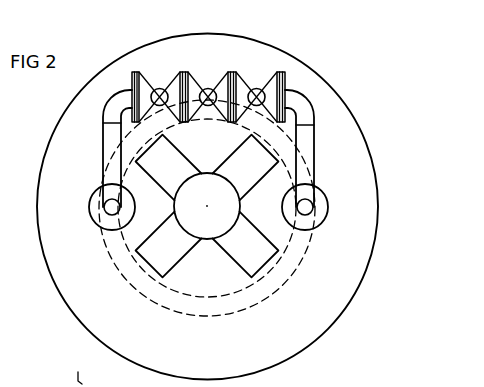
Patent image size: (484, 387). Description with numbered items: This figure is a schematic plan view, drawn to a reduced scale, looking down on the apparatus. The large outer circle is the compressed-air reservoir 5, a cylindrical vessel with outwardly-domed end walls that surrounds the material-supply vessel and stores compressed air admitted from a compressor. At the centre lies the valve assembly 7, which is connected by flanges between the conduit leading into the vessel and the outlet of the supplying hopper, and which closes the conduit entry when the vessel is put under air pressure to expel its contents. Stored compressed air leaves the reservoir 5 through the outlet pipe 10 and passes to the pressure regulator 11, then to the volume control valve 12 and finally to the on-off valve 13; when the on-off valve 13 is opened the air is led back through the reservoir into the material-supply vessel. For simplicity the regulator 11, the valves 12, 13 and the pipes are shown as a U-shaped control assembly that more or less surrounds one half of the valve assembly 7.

The compressed-air reservoir 5 is at (72, 316).
The valve assembly 7 is at (274, 252).
The outlet pipe 10 is at (310, 157).
The pressure regulator 11 is at (265, 80).
The volume control valve 12 is at (212, 80).
The on-off valve 13 is at (158, 80).